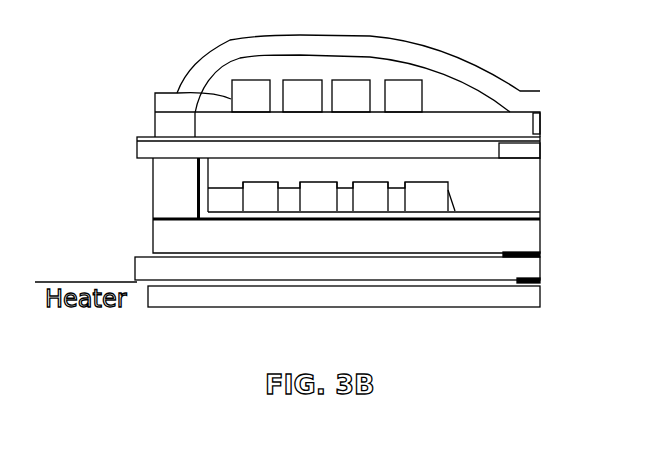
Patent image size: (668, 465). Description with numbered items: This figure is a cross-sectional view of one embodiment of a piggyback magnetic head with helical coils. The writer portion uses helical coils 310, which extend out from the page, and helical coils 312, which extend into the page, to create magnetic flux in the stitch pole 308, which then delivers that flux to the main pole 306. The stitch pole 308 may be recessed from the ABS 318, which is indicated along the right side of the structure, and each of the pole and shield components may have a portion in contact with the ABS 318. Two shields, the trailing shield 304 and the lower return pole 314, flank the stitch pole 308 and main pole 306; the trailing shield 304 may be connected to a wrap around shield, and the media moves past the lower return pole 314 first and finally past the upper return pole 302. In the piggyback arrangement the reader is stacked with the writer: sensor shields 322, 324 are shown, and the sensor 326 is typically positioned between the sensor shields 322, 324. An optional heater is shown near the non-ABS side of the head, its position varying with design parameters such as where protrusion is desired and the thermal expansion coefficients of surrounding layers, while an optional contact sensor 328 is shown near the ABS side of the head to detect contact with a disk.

The upper return pole 302 is at (477, 63).
The trailing shield 304 is at (543, 125).
The main pole 306 is at (542, 150).
The stitch pole 308 is at (493, 158).
The helical coils 310 is at (176, 92).
The helical coils 312 is at (247, 182).
The lower return pole 314 is at (382, 244).
The ABS 318 is at (541, 214).
The sensor shield 322 is at (134, 277).
The sensor shield 324 is at (257, 306).
The sensor 326 is at (538, 278).
The contact sensor 328 is at (538, 251).